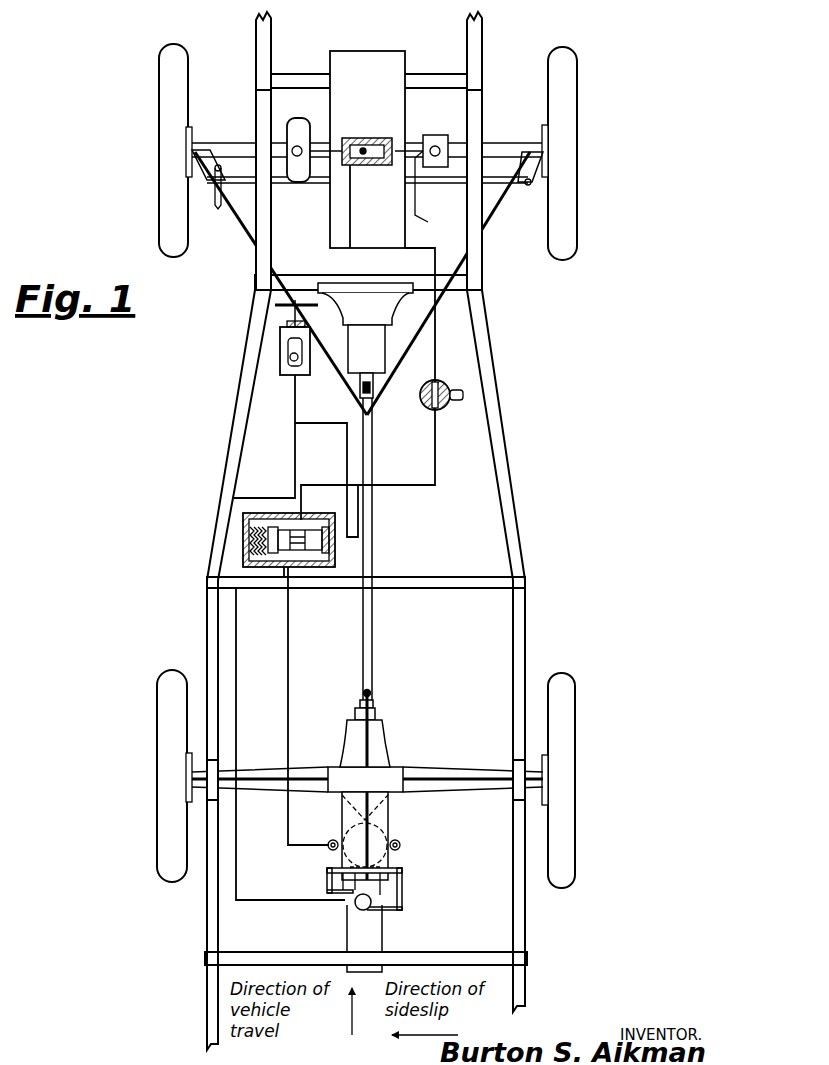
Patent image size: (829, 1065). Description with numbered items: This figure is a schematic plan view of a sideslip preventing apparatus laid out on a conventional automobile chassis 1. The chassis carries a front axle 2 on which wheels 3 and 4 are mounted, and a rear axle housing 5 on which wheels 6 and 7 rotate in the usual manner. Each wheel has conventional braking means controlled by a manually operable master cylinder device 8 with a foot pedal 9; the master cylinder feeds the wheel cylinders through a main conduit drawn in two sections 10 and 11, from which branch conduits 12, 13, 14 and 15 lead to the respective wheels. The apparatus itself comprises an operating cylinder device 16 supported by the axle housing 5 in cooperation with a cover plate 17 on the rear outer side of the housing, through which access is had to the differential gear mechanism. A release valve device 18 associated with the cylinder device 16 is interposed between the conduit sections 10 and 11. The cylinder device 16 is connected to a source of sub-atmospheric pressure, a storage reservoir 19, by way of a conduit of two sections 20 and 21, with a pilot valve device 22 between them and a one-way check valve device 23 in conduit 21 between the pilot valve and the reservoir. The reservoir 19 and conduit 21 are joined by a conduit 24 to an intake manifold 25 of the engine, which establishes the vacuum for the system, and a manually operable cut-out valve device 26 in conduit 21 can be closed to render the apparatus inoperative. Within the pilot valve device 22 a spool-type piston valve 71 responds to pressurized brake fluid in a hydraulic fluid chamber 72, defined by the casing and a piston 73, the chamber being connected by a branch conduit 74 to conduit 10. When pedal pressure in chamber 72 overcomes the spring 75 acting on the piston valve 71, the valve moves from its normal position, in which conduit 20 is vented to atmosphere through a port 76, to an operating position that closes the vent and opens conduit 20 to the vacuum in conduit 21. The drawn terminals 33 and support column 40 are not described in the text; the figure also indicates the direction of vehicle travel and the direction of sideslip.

The automobile chassis 1 is at (489, 337).
The front axle 2 is at (228, 143).
The wheel 3 is at (172, 108).
The wheel 4 is at (563, 112).
The rear axle housing 5 is at (367, 781).
The wheel 6 is at (168, 713).
The wheel 7 is at (566, 710).
The master cylinder device 8 is at (278, 358).
The foot pedal 9 is at (283, 330).
The main conduit section 10 is at (233, 630).
The main conduit section 11 is at (376, 640).
The branch conduit 12 is at (247, 210).
The branch conduit 13 is at (500, 200).
The branch conduit 14 is at (265, 772).
The branch conduit 15 is at (418, 767).
The operating cylinder device 16 is at (380, 825).
The cover plate 17 is at (340, 800).
The release valve device 18 is at (355, 906).
The storage reservoir 19 is at (291, 120).
The conduit section 20 is at (290, 640).
The conduit section 21 is at (353, 250).
The pilot valve device 22 is at (292, 545).
The one-way check valve device 23 is at (353, 136).
The conduit 24 is at (433, 196).
The intake manifold 25 is at (436, 135).
The cut-out valve device 26 is at (450, 388).
The terminals 33 is at (380, 860).
The support column 40 is at (373, 940).
The piston valve 71 is at (290, 513).
The hydraulic fluid chamber 72 is at (337, 547).
The piston 73 is at (325, 513).
The branch conduit 74 is at (347, 440).
The spring 75 is at (248, 533).
The port 76 is at (285, 570).